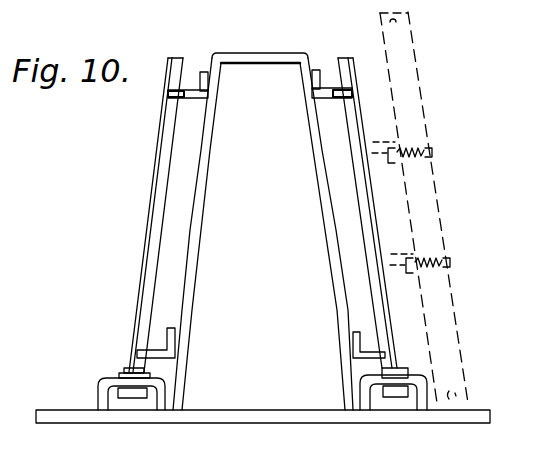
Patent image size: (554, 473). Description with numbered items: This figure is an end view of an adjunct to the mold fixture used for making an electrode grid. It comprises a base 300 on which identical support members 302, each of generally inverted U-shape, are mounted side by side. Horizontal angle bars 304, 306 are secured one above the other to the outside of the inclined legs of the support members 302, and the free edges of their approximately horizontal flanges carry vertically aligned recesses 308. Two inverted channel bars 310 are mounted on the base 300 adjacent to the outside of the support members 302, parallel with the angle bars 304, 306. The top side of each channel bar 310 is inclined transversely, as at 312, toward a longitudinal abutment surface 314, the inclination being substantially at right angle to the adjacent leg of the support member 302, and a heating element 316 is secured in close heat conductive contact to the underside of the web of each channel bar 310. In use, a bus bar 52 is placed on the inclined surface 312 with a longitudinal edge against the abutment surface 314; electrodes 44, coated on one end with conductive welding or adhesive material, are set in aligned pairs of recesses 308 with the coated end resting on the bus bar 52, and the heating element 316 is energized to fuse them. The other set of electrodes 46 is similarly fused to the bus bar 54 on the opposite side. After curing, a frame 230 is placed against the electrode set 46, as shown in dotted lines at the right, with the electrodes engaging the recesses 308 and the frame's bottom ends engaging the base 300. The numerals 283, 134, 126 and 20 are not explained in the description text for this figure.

The base 300 is at (280, 424).
The support member 302 is at (263, 208).
The angle bar 304 is at (312, 88).
The electrodes 44 is at (157, 190).
The electrodes 46 is at (378, 242).
The clamp 283 is at (428, 146).
The frame 230 is at (447, 191).
The recesses 308 is at (163, 112).
The angle bar 306 is at (155, 347).
The inclined surface 312 is at (130, 371).
The bus bar 52 is at (133, 370).
The inverted channel bar 310 is at (98, 379).
The heating element 316 is at (133, 397).
The abutment surface 314 is at (178, 387).
The bus bar 54 is at (407, 372).
The upper member 134 is at (228, 2).
The base member 126 is at (21, 444).
The apparatus 20 is at (13, 327).